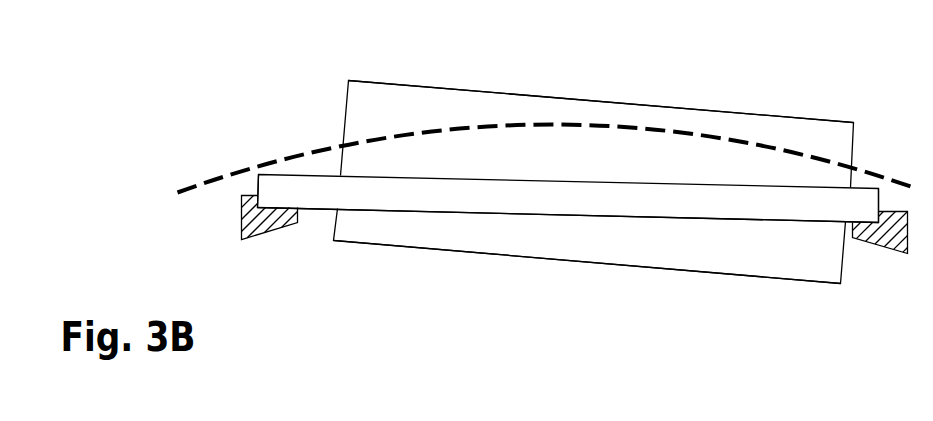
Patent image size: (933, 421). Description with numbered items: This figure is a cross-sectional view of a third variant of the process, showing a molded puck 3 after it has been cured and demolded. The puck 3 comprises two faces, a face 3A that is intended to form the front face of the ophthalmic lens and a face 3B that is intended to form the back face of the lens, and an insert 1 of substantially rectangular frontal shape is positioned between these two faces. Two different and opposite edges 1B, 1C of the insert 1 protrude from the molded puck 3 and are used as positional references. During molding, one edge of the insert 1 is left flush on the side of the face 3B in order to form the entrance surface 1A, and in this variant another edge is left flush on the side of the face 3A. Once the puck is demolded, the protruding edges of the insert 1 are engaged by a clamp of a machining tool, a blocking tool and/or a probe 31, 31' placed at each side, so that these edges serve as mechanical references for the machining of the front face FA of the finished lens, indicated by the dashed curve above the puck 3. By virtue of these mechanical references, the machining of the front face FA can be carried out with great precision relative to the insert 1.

The insert 1 is at (433, 190).
The entrance surface 1A is at (306, 208).
The edge of the insert 1B is at (299, 192).
The edge of the insert 1C is at (868, 200).
The puck 3 is at (772, 283).
The face of the puck 3A is at (772, 113).
The face of the puck 3B is at (510, 256).
The probe 31 is at (266, 252).
The probe 31' is at (880, 265).
The front face of the finished lens FA is at (625, 127).